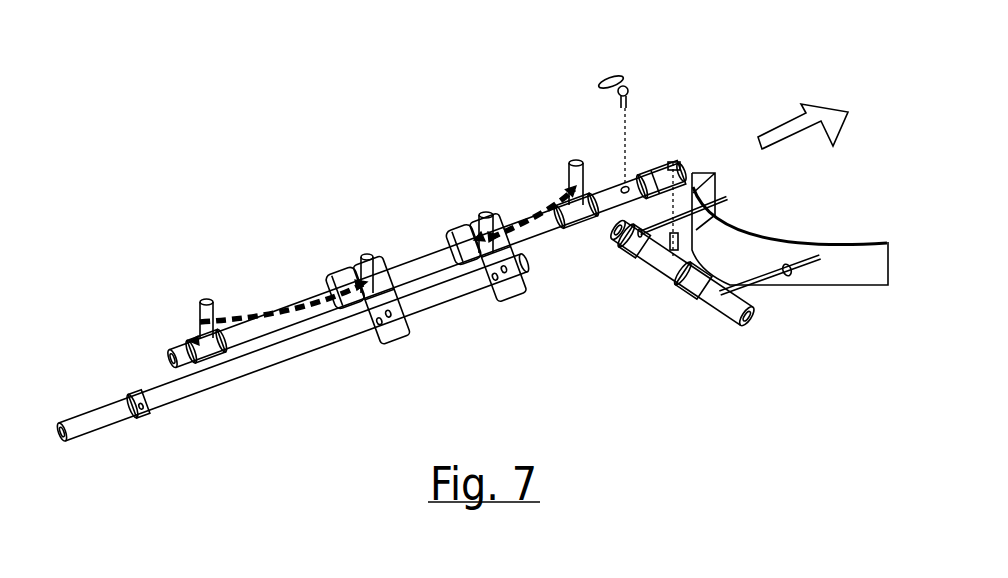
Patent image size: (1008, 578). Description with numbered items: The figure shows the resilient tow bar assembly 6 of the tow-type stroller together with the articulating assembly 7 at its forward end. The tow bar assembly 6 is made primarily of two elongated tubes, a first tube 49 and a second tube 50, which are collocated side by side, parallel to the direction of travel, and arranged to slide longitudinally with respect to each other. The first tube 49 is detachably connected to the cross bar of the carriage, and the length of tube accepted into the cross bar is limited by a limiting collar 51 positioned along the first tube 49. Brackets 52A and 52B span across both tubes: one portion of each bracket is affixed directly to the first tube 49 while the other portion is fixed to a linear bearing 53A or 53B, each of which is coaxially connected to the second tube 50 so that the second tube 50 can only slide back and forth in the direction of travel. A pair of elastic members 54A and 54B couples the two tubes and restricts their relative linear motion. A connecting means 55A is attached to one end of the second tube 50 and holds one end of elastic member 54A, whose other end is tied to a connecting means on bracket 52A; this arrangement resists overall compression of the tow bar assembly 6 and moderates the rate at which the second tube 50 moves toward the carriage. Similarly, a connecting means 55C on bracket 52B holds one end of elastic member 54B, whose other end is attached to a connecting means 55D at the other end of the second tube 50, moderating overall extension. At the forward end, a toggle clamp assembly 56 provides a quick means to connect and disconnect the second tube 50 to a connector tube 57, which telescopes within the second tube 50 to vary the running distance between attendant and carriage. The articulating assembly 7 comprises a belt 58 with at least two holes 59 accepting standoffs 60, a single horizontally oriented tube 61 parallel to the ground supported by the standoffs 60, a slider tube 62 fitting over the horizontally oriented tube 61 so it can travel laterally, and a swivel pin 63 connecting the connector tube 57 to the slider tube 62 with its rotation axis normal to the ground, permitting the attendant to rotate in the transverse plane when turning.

The tow bar assembly 6 is at (393, 80).
The articulating assembly 7 is at (640, 356).
The first tube 49 is at (284, 360).
The second tube 50 is at (172, 348).
The limiting collar 51 is at (150, 414).
The bracket 52A is at (387, 329).
The bracket 52B is at (533, 302).
The linear bearing 53A is at (323, 290).
The linear bearing 53B is at (450, 243).
The elastic member 54A is at (242, 312).
The elastic member 54B is at (547, 207).
The connecting means 55A is at (205, 299).
The connecting means 55C is at (486, 213).
The connecting means 55D is at (577, 162).
The toggle clamp assembly 56 is at (630, 88).
The connector tube 57 is at (655, 165).
The belt 58 is at (868, 265).
The holes 59 is at (792, 274).
The standoffs 60 is at (694, 191).
The horizontally oriented tube 61 is at (710, 292).
The slider tube 62 is at (670, 281).
The swivel pin 63 is at (640, 262).